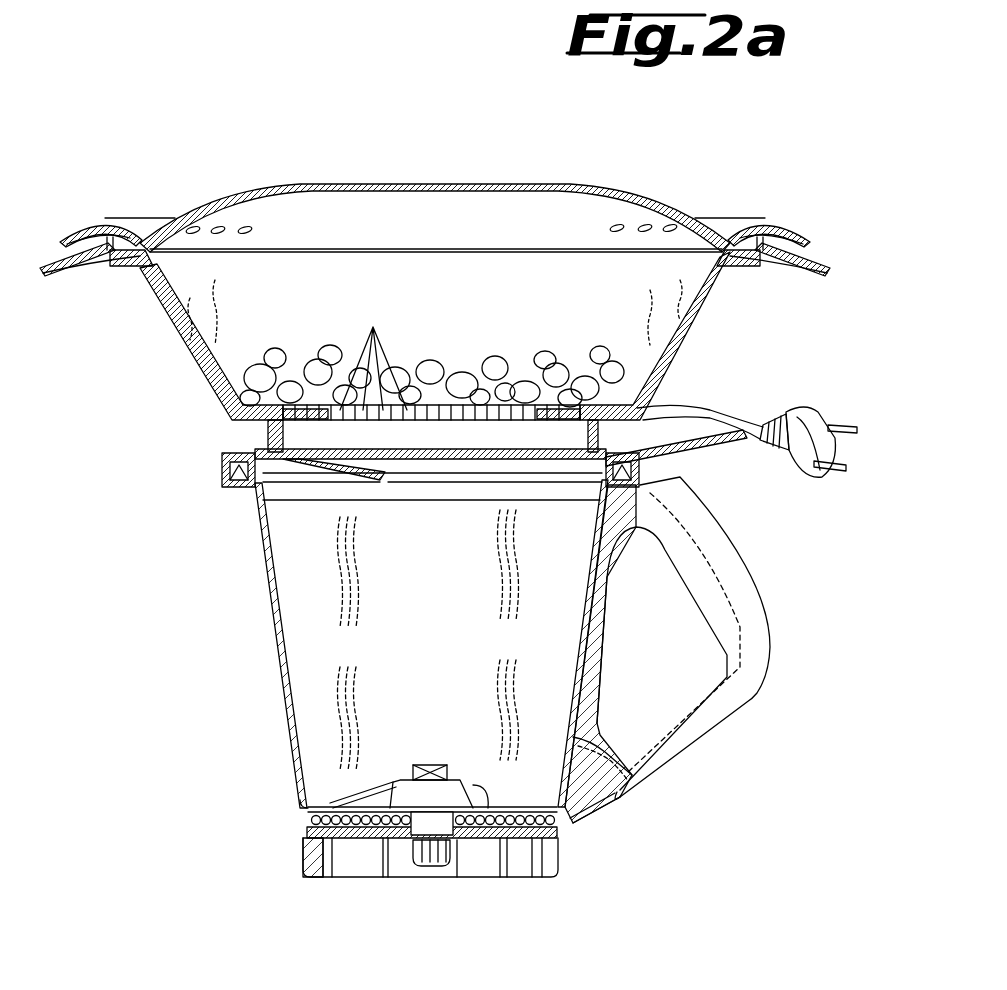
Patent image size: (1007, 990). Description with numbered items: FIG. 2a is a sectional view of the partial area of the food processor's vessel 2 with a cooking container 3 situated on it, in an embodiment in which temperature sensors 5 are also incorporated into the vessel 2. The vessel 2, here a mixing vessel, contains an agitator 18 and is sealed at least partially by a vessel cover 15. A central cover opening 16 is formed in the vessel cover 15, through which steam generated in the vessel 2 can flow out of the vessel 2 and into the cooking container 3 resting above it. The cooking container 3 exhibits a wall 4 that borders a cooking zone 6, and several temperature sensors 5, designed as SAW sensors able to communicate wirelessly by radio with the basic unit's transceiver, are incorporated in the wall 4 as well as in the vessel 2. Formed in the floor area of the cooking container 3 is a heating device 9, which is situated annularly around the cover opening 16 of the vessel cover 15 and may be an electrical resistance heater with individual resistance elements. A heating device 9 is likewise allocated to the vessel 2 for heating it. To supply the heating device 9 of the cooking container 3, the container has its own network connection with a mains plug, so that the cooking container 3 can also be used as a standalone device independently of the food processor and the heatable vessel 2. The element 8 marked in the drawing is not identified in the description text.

The vessel 2 is at (325, 658).
The cooking container 3 is at (715, 340).
The wall 4 is at (592, 410).
The temperature sensors 5 is at (193, 332).
The cooking zone 6 is at (465, 346).
The steam cone 8 is at (373, 327).
The heating device 9 is at (313, 408).
The vessel cover 15 is at (240, 485).
The cover opening 16 is at (412, 475).
The agitator 18 is at (395, 783).